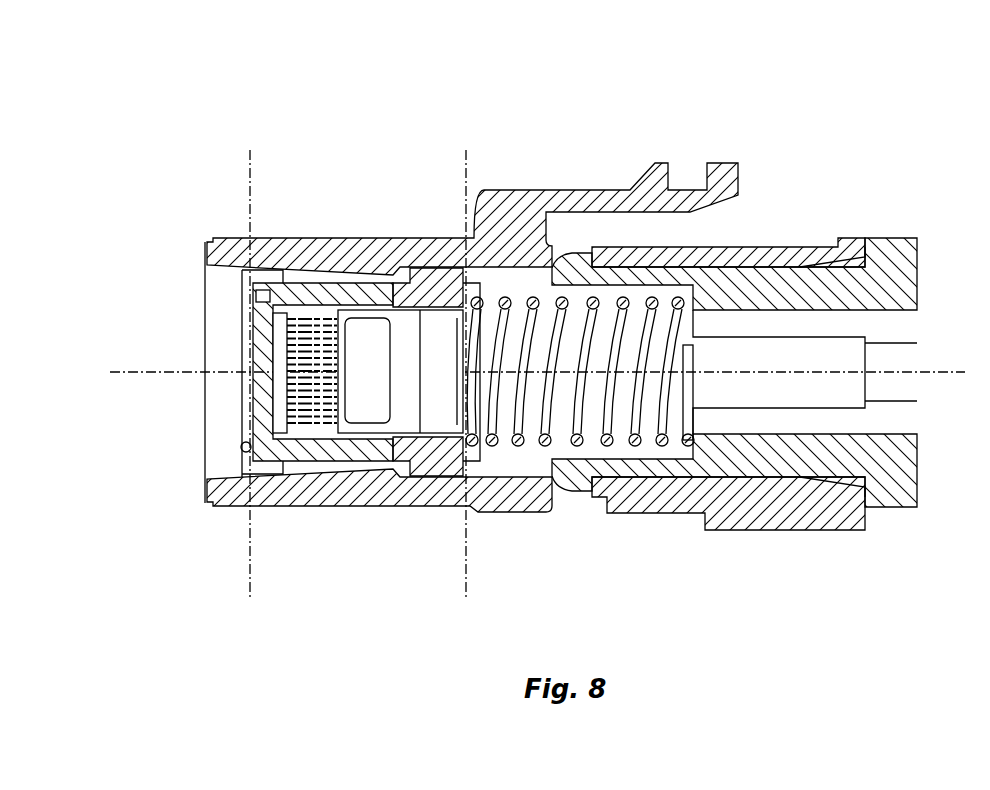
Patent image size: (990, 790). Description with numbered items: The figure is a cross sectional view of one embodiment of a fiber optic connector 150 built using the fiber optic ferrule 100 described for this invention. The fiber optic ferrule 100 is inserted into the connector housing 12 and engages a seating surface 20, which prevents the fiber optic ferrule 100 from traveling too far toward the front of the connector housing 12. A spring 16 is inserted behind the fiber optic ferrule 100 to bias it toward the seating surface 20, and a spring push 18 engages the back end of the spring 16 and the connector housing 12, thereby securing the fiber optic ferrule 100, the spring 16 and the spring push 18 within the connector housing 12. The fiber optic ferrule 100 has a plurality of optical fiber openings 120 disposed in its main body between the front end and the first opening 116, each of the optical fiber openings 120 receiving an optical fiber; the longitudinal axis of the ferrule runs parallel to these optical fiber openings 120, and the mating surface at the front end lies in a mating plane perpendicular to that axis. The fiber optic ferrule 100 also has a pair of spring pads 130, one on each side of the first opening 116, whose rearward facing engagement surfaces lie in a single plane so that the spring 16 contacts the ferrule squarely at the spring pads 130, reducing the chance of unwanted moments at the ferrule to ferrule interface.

The fiber optic connector 150 is at (599, 119).
The spring push 18 is at (894, 248).
The connector housing 12 is at (340, 238).
The seating surface 20 is at (405, 265).
The first opening 116 is at (442, 333).
The fiber optic ferrule 100 is at (257, 340).
The optical fiber openings 120 is at (300, 438).
The spring pads 130 is at (465, 440).
The spring 16 is at (505, 440).